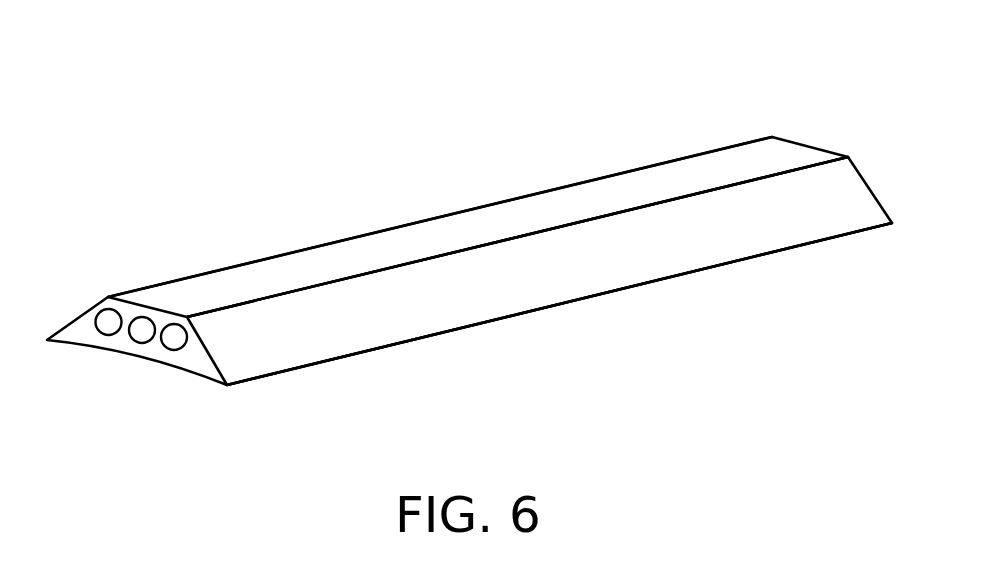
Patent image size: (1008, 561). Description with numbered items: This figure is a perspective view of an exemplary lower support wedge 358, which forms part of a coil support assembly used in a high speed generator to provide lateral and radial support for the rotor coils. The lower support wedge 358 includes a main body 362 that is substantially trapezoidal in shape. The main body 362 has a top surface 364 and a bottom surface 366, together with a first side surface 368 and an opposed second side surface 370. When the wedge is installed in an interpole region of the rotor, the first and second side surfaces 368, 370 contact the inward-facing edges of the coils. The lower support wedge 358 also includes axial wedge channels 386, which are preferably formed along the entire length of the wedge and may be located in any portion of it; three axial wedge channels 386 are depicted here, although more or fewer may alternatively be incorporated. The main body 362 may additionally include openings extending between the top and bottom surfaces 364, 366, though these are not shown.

The lower support wedge 358 is at (500, 199).
The main body 362 is at (487, 303).
The top surface 364 is at (433, 227).
The bottom surface 366 is at (383, 350).
The first side surface 368 is at (650, 265).
The second side surface 370 is at (82, 313).
The axial wedge channels 386 is at (157, 273).